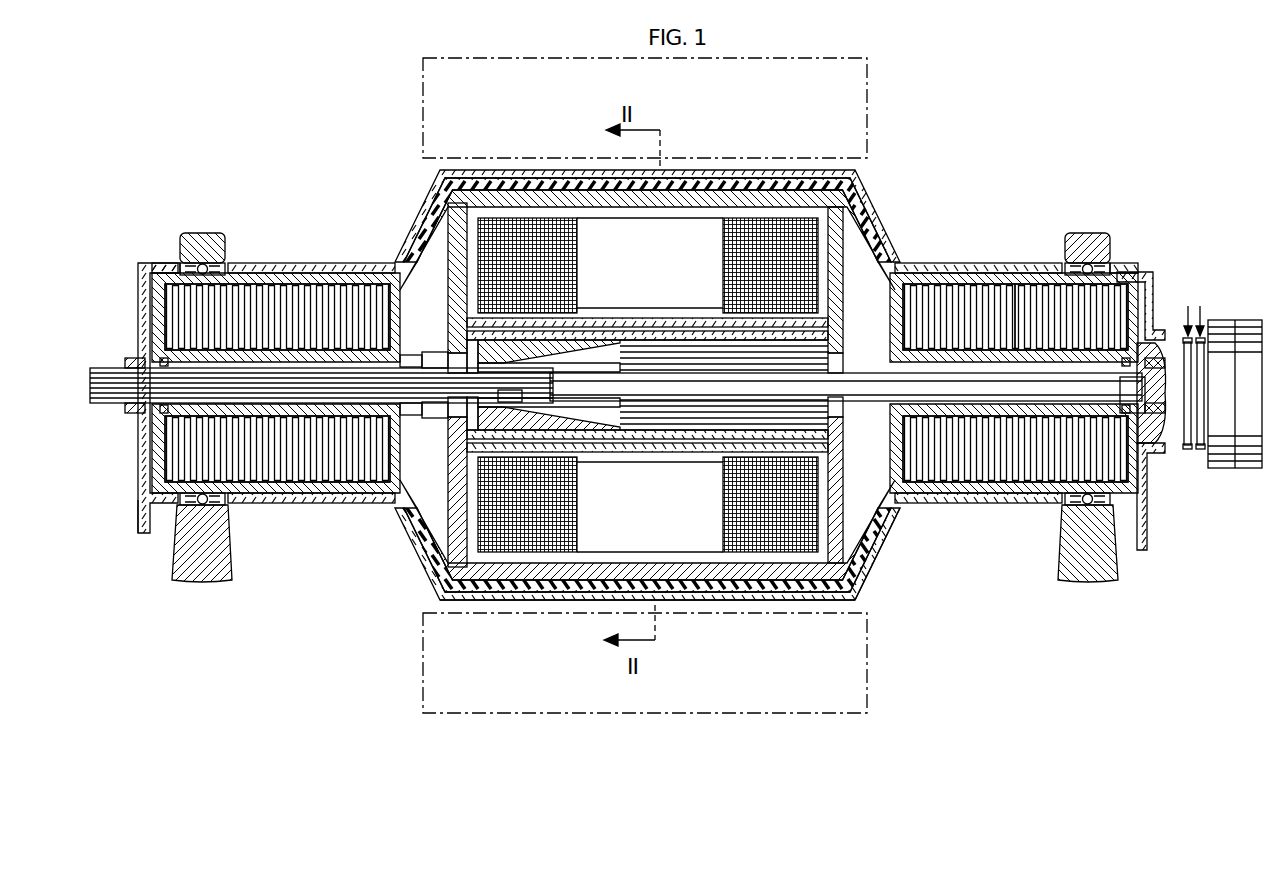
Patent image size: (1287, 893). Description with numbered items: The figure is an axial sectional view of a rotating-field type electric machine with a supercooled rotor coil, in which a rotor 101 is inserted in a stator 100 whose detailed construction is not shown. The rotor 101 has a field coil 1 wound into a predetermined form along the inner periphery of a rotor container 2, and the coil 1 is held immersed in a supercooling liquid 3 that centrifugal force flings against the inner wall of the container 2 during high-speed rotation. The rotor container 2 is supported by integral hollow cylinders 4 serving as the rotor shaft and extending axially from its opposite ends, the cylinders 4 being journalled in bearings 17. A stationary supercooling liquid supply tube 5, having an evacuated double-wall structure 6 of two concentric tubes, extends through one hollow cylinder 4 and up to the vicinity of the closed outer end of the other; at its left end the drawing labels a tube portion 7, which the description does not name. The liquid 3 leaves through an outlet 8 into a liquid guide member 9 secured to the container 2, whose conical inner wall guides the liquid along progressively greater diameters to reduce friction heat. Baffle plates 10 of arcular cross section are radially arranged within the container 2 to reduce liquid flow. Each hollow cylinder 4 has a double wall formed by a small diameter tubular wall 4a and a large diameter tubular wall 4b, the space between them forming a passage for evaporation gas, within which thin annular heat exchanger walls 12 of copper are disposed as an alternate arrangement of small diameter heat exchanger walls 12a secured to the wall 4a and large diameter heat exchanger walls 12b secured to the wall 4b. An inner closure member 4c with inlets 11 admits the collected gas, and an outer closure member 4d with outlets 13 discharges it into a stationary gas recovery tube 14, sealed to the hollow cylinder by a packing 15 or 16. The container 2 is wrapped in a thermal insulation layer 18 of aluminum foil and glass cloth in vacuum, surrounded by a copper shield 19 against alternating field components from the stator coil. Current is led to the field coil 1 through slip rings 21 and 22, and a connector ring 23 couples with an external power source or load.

The field coil 1 is at (757, 222).
The rotor container 2 is at (706, 196).
The supercooling liquid 3 is at (690, 565).
The hollow cylinder 4 is at (357, 483).
The small diameter tubular wall 4a is at (1133, 395).
The large diameter tubular wall 4b is at (264, 290).
The inner closure member 4c is at (400, 293).
The outer closure member 4d is at (162, 340).
The supercooling liquid supply tube 5 is at (409, 371).
The double-wall structure 6 is at (433, 371).
The hollow shaft 7 is at (92, 380).
The outlet 8 is at (505, 405).
The liquid guide member 9 is at (578, 432).
The baffle plates 10 is at (828, 348).
The inlet 11 is at (898, 352).
The heat exchanger walls 12 is at (305, 470).
The small diameter heat exchanger walls 12a is at (958, 300).
The large diameter heat exchanger walls 12b is at (1012, 300).
The outlet 13 is at (158, 467).
The gas recovery tube 14 is at (150, 515).
The packing 15 is at (165, 503).
The packing 16 is at (1153, 450).
The bearings 17 is at (218, 503).
The thermal insulation layer 18 is at (748, 592).
The shield 19 is at (853, 567).
The slip ring 21 is at (1186, 450).
The slip ring 22 is at (1204, 450).
The connector ring 23 is at (1244, 465).
The stator 100 is at (928, 130).
The rotor 101 is at (928, 200).